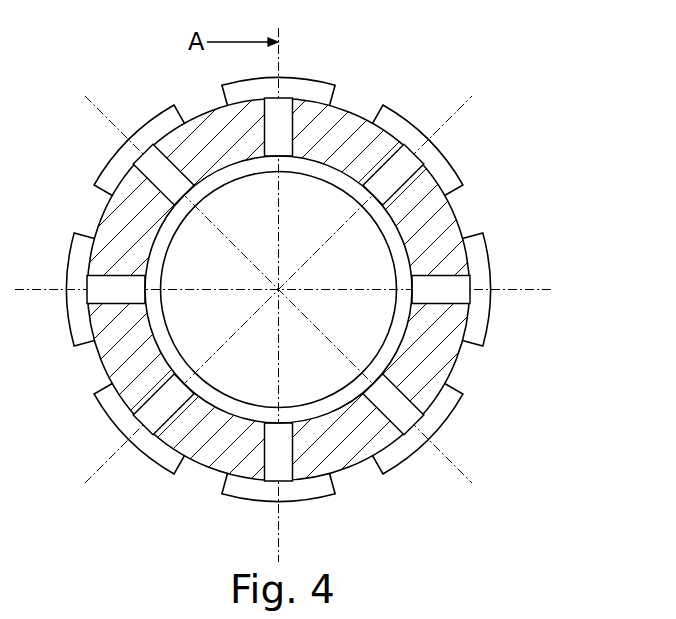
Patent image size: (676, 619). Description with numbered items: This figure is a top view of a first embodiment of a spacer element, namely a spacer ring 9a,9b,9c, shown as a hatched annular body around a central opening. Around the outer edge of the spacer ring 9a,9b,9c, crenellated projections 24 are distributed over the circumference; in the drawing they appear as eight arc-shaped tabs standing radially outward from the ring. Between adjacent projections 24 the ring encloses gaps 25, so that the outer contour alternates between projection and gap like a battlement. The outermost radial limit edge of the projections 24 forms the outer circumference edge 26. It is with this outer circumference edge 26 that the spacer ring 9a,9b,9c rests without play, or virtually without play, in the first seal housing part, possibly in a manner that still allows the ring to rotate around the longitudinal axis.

The gaps 25 is at (353, 105).
The crenellated projections 24 is at (458, 163).
The spacer ring 9a,9b,9c is at (457, 221).
The outer circumference edge 26 is at (493, 312).